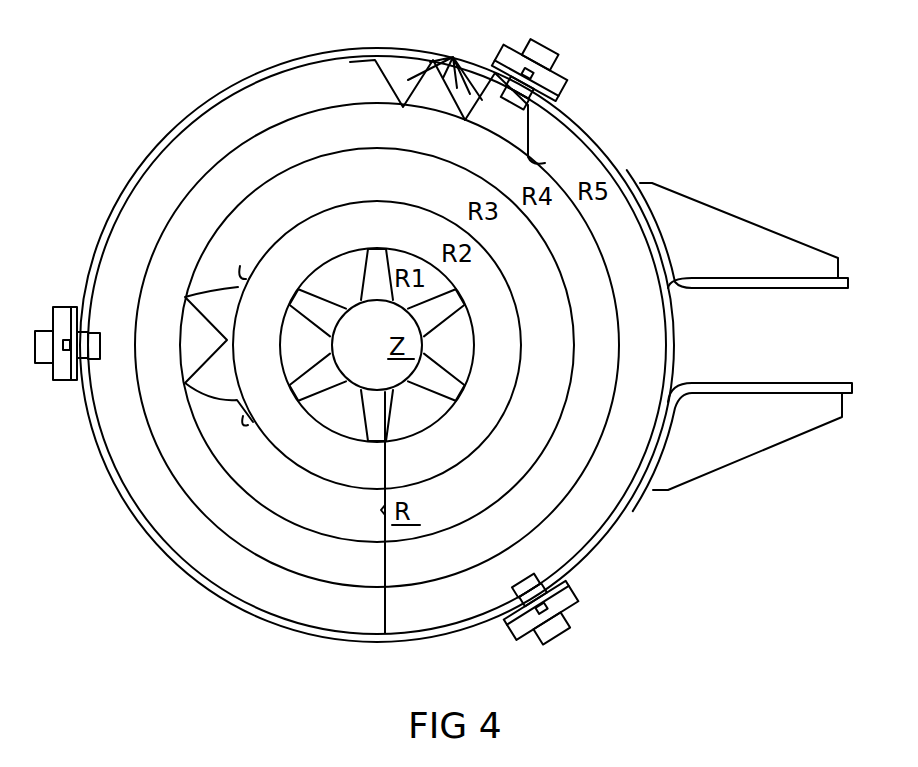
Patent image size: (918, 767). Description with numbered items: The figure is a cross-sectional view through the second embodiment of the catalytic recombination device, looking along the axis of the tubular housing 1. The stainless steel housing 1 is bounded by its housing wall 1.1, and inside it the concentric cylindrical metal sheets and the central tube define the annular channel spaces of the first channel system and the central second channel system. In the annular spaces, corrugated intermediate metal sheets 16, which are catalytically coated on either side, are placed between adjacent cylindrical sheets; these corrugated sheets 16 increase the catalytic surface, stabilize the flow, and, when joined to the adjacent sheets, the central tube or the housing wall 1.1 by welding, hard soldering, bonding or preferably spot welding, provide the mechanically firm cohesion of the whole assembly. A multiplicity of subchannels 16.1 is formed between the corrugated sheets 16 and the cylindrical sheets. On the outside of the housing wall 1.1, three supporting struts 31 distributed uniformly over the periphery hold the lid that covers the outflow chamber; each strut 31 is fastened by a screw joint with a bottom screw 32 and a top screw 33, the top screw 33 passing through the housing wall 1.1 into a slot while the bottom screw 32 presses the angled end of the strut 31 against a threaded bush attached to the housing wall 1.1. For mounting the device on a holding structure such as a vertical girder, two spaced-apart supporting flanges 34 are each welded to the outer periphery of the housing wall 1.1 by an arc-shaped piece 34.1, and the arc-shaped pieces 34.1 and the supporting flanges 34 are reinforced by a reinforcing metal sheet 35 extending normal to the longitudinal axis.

The tubular housing 1 is at (180, 122).
The housing wall 1.1 is at (266, 70).
The corrugated intermediate metal sheet 16 is at (380, 58).
The subchannels 16.1 is at (453, 57).
The supporting strut 31 is at (516, 60).
The bottom screw 32 is at (41, 365).
The top screw 33 is at (92, 362).
The supporting flange 34 is at (793, 280).
The arc-shaped piece 34.1 is at (657, 222).
The reinforcing metal sheet 35 is at (688, 462).